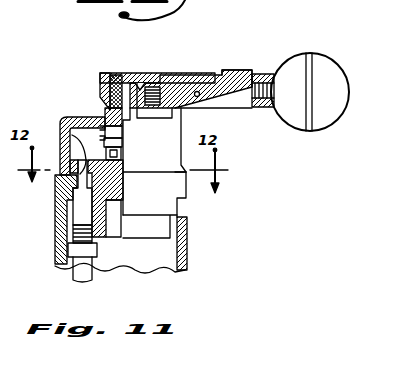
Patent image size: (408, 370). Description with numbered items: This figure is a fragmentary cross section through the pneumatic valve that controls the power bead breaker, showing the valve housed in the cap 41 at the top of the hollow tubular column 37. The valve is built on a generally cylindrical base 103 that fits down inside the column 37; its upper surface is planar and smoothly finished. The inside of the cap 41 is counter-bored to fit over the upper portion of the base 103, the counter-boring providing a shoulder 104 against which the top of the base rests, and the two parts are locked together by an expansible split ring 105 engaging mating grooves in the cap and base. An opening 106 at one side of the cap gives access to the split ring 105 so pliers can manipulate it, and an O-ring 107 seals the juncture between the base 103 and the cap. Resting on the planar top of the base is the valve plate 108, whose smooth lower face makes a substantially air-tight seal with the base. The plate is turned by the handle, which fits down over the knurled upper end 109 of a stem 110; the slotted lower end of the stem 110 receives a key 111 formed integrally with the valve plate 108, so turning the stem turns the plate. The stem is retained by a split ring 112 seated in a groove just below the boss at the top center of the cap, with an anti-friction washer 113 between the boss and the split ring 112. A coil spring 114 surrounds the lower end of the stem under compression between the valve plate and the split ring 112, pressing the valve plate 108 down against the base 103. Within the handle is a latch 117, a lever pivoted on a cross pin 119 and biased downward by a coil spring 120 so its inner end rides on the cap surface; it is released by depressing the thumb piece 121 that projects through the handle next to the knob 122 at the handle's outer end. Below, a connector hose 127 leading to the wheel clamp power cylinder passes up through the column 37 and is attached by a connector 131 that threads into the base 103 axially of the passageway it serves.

The column 37 is at (188, 266).
The cap 41 is at (185, 170).
The base 103 is at (124, 244).
The shoulder 104 is at (68, 177).
The split ring 105 is at (57, 214).
The opening 106 is at (186, 203).
The O-ring 107 is at (55, 196).
The valve plate 108 is at (66, 160).
The knurled upper end 109 is at (117, 74).
The stem 110 is at (107, 105).
The key 111 is at (122, 160).
The split ring 112 is at (122, 127).
The anti-friction washer 113 is at (102, 126).
The coil spring 114 is at (122, 143).
The latch 117 is at (188, 90).
The cross pin 119 is at (224, 72).
The coil spring 120 is at (160, 83).
The thumb piece 121 is at (256, 71).
The knob 122 is at (331, 78).
The connector hose 127 is at (80, 268).
The connector 131 is at (78, 250).